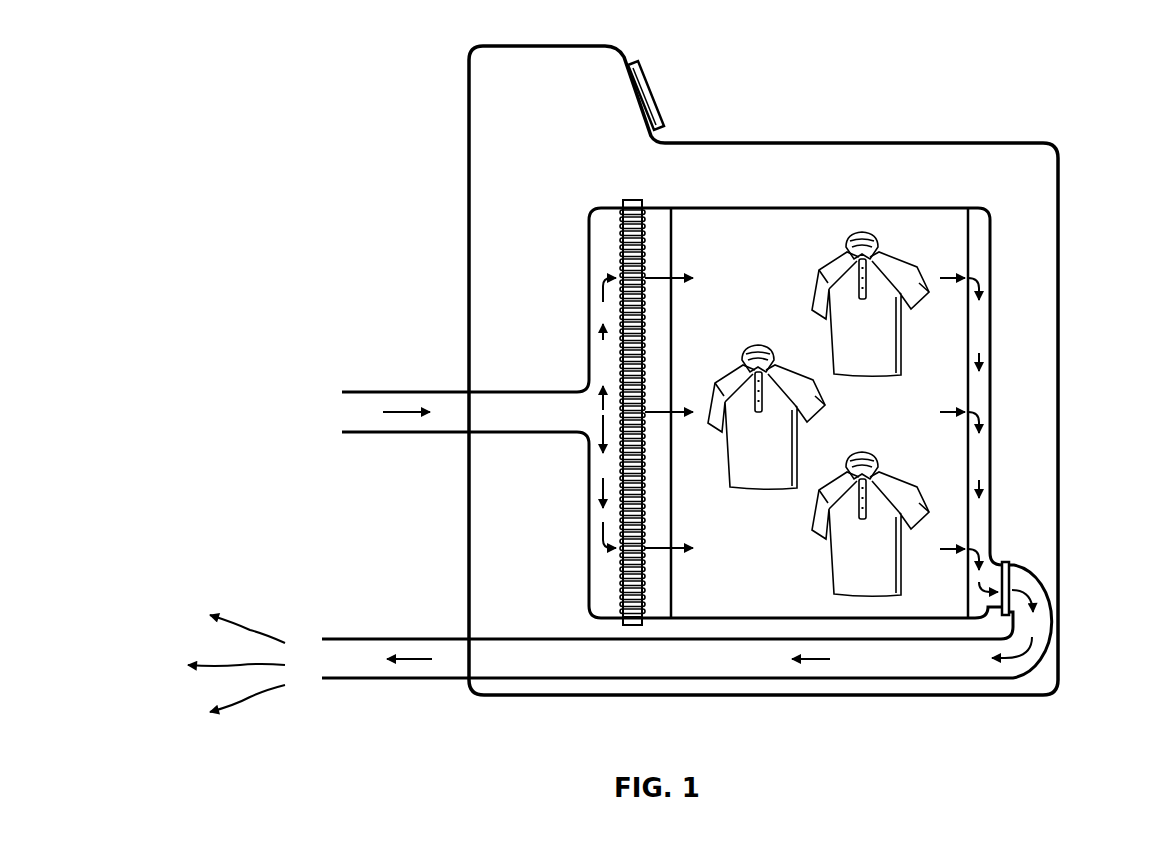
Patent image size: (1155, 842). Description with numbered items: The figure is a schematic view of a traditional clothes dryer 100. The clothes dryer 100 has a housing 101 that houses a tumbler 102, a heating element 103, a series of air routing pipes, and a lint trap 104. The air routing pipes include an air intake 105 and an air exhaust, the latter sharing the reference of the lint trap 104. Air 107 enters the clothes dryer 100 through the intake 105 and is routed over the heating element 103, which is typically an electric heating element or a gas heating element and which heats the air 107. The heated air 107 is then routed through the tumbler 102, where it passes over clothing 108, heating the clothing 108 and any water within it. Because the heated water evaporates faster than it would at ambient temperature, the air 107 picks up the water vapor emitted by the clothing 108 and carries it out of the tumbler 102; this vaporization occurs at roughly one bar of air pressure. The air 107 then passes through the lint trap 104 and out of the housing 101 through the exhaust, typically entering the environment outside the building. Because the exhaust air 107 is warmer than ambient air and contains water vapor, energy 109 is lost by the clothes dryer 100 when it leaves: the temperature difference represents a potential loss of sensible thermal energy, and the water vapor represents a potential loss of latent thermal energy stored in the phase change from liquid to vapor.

The clothes dryer 100 is at (370, 44).
The housing 101 is at (1010, 143).
The tumbler 102 is at (818, 207).
The heating element 103 is at (632, 200).
The lint trap 104 is at (1007, 560).
The air intake 105 is at (362, 392).
The air 107 is at (397, 408).
The clothing 108 is at (842, 335).
The energy 109 is at (243, 625).